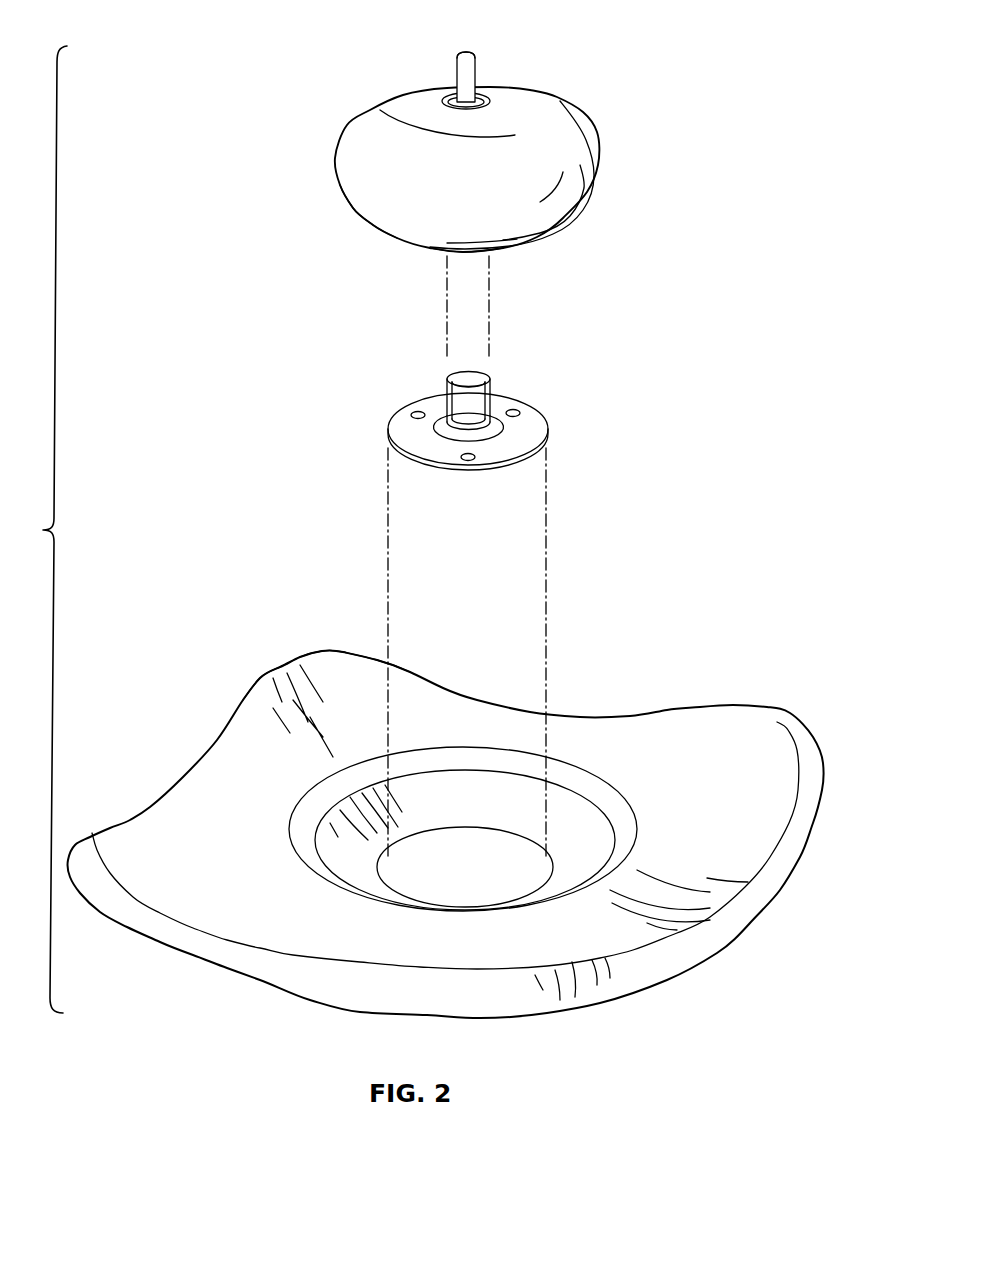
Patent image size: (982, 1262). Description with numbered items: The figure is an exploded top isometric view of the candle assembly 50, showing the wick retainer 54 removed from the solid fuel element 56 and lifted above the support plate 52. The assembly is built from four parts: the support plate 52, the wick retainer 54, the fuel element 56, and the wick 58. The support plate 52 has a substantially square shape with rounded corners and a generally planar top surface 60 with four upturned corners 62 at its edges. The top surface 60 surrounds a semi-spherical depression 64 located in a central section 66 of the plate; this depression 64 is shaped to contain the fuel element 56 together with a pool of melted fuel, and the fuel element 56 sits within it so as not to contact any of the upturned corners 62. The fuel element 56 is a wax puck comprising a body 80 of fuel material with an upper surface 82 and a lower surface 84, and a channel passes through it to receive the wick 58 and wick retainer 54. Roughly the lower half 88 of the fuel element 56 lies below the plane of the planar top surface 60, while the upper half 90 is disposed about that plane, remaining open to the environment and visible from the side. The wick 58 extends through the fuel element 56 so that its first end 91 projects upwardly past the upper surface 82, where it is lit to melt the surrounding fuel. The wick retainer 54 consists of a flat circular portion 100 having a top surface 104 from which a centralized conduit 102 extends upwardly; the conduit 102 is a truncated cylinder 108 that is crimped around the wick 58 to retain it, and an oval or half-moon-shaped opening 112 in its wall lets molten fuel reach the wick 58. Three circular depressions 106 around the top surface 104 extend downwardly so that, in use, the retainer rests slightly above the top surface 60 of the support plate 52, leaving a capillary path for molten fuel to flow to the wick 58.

The candle assembly 50 is at (432, 515).
The support plate 52 is at (787, 668).
The wick retainer 54 is at (582, 341).
The solid fuel element 56 is at (619, 182).
The wick 58 is at (476, 72).
The top surface 60 is at (725, 725).
The upturned corners 62 is at (327, 665).
The semi-spherical depression 64 is at (577, 775).
The central section 66 is at (484, 758).
The body 80 is at (580, 148).
The upper surface 82 is at (545, 98).
The lower surface 84 is at (520, 250).
The lower half 88 is at (383, 212).
The upper half 90 is at (395, 109).
The first end 91 is at (468, 52).
The flat circular portion 100 is at (530, 428).
The centralized conduit 102 is at (483, 378).
The top surface 104 is at (433, 408).
The circular depressions 106 is at (520, 415).
The truncated cylinder 108 is at (455, 390).
The opening 112 is at (474, 414).